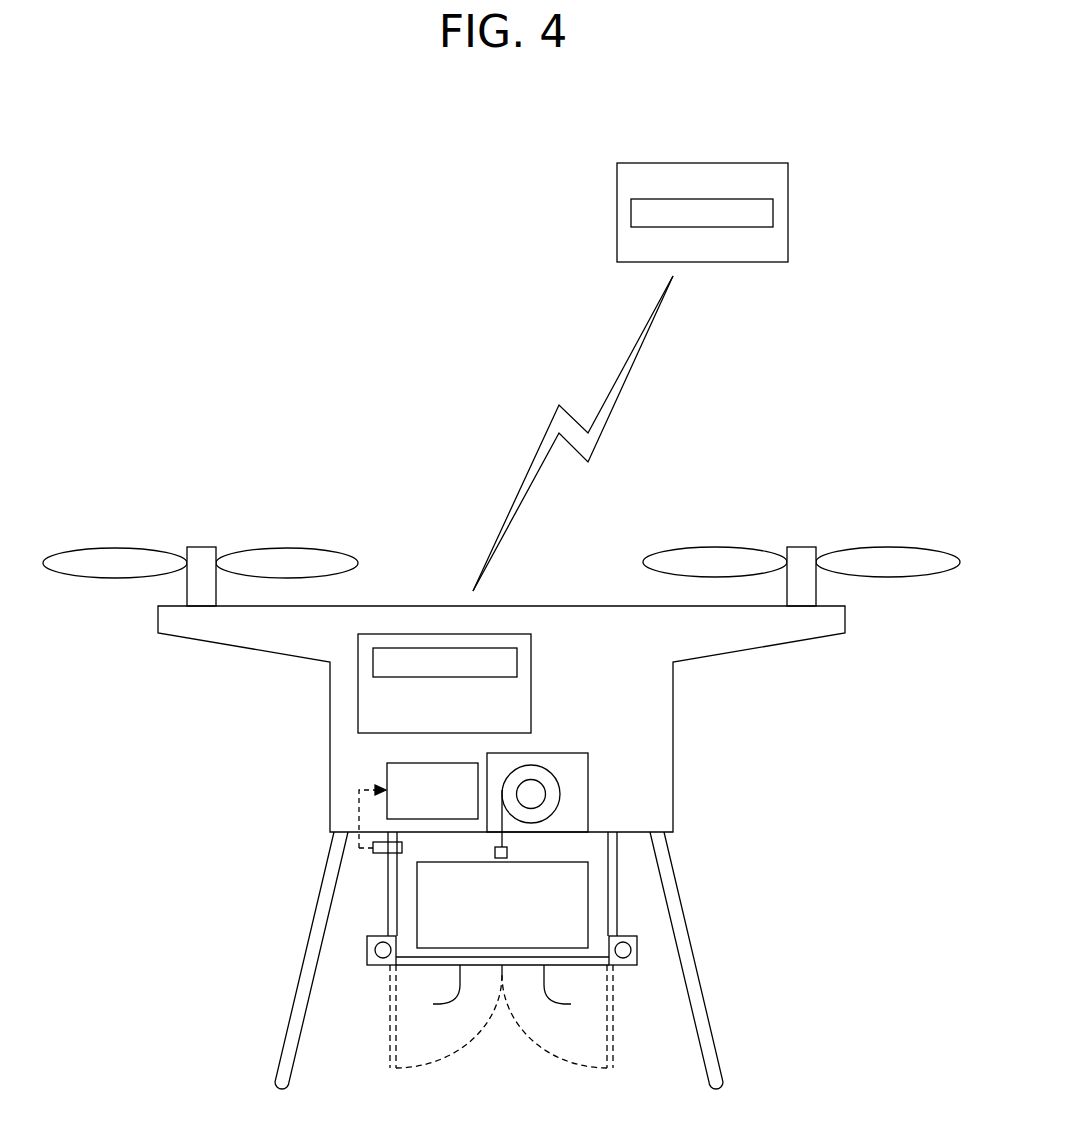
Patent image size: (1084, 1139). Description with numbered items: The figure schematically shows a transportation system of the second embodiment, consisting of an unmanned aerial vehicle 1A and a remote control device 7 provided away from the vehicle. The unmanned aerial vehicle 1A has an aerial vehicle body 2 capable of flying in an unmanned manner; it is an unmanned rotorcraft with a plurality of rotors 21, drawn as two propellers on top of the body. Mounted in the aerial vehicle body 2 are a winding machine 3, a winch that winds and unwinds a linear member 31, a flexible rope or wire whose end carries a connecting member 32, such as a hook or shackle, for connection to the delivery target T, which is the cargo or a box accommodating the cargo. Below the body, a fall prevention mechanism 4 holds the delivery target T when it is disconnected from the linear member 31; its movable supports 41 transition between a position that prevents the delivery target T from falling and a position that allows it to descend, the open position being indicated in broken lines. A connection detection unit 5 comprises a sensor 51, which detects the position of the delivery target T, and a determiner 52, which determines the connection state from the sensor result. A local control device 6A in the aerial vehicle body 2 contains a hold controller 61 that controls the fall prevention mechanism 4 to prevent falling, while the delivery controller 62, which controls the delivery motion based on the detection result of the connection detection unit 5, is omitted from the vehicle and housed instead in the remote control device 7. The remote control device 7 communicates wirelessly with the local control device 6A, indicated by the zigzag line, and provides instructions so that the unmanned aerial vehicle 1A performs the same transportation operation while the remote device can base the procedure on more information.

The unmanned aerial vehicle 1A is at (501, 747).
The aerial vehicle body 2 is at (570, 587).
The rotors 21 is at (128, 546).
The winding machine 3 is at (627, 800).
The linear member 31 is at (530, 824).
The connecting member 32 is at (507, 852).
The fall prevention mechanism 4 is at (548, 950).
The movable supports 41 is at (433, 1004).
The connection detection unit 5 is at (343, 820).
The sensor 51 is at (373, 853).
The determiner 52 is at (387, 773).
The local control device 6A is at (387, 626).
The hold controller 61 is at (358, 660).
The remote control device 7 is at (745, 163).
The delivery controller 62 is at (773, 215).
The delivery target T is at (417, 905).